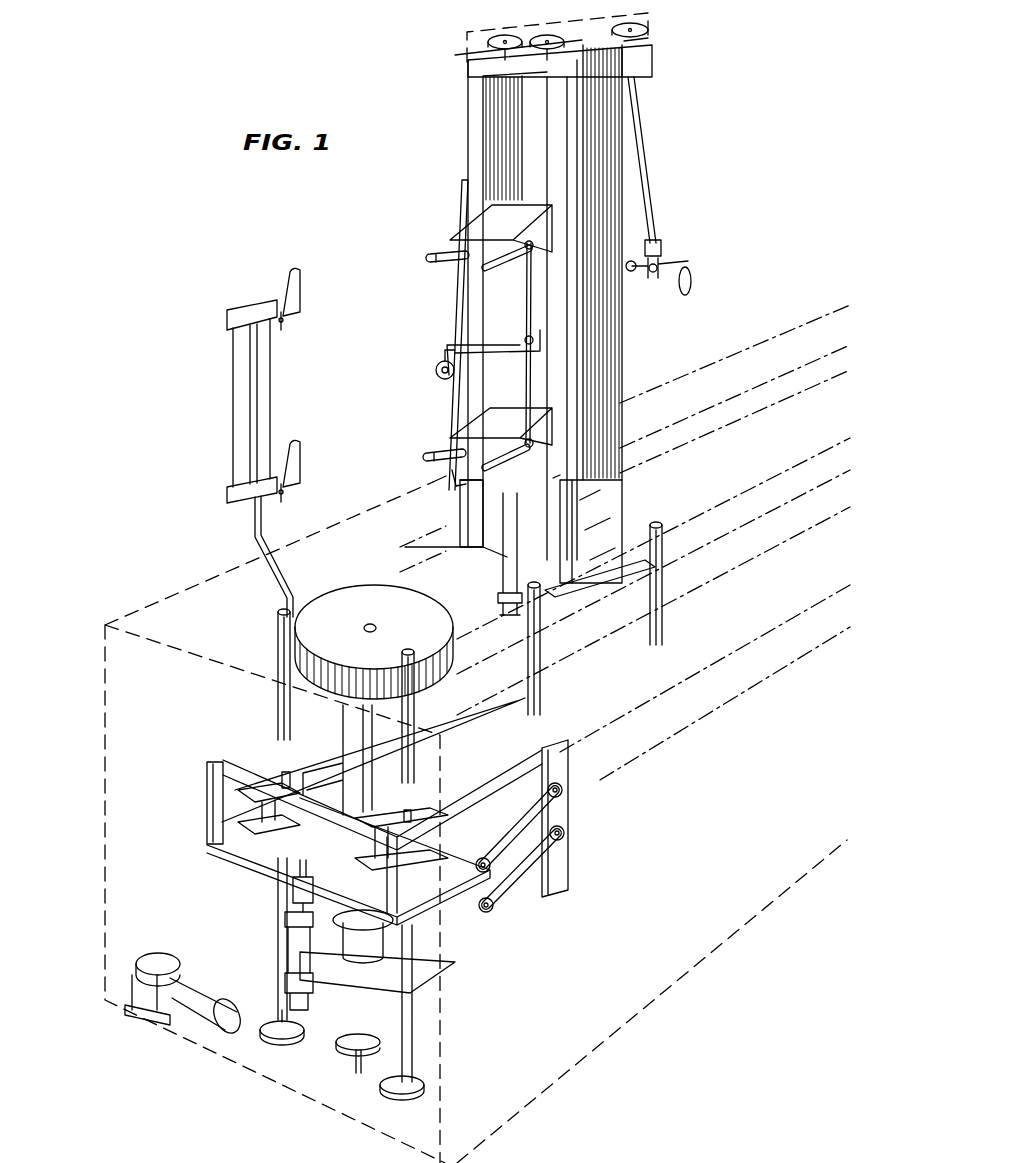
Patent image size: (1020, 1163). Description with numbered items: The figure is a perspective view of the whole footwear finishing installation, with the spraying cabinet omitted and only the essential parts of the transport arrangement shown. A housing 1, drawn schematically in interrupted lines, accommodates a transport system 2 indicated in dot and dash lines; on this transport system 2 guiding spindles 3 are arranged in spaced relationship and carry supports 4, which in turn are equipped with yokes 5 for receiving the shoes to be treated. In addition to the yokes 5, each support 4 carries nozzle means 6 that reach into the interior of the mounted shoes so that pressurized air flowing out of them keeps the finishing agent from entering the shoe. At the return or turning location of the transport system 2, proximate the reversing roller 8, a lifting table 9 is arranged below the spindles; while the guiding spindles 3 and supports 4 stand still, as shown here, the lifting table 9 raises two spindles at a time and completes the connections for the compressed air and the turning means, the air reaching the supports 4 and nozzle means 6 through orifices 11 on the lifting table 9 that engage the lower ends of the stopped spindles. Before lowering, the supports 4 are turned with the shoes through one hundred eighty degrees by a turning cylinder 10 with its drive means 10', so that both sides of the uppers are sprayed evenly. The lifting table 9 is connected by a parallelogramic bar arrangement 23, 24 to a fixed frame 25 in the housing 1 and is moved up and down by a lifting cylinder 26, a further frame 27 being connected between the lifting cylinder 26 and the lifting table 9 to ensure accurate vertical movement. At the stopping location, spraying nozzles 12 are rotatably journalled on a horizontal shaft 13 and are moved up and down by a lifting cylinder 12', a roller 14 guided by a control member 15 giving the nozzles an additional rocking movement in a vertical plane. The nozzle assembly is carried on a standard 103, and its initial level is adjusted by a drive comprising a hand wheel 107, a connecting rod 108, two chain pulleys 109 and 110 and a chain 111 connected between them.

The housing 1 is at (760, 918).
The transport system 2 is at (738, 496).
The guiding spindles 3 is at (280, 662).
The supports 4 is at (253, 526).
The yokes 5 is at (298, 274).
The nozzle means 6 is at (285, 324).
The reversing roller 8 is at (430, 615).
The lifting table 9 is at (276, 860).
The turning cylinder 10 is at (185, 1012).
The drive means 10' is at (342, 1067).
The orifices 11 is at (283, 774).
The spraying nozzles 12 is at (483, 351).
The lifting cylinder 12' is at (525, 554).
The horizontal shaft 13 is at (466, 225).
The roller 14 is at (436, 366).
The control member 15 is at (455, 401).
The parallelogramic bar arrangement 23 is at (497, 868).
The parallelogramic bar arrangement 24 is at (522, 878).
The frame 25 is at (570, 856).
The lifting cylinder 26 is at (296, 950).
The frame 27 is at (207, 792).
The standard 103 is at (606, 372).
The hand wheel 107 is at (675, 264).
The connecting rod 108 is at (636, 95).
The chain pulley 109 is at (650, 36).
The chain pulley 110 is at (490, 47).
The chain 111 is at (500, 60).